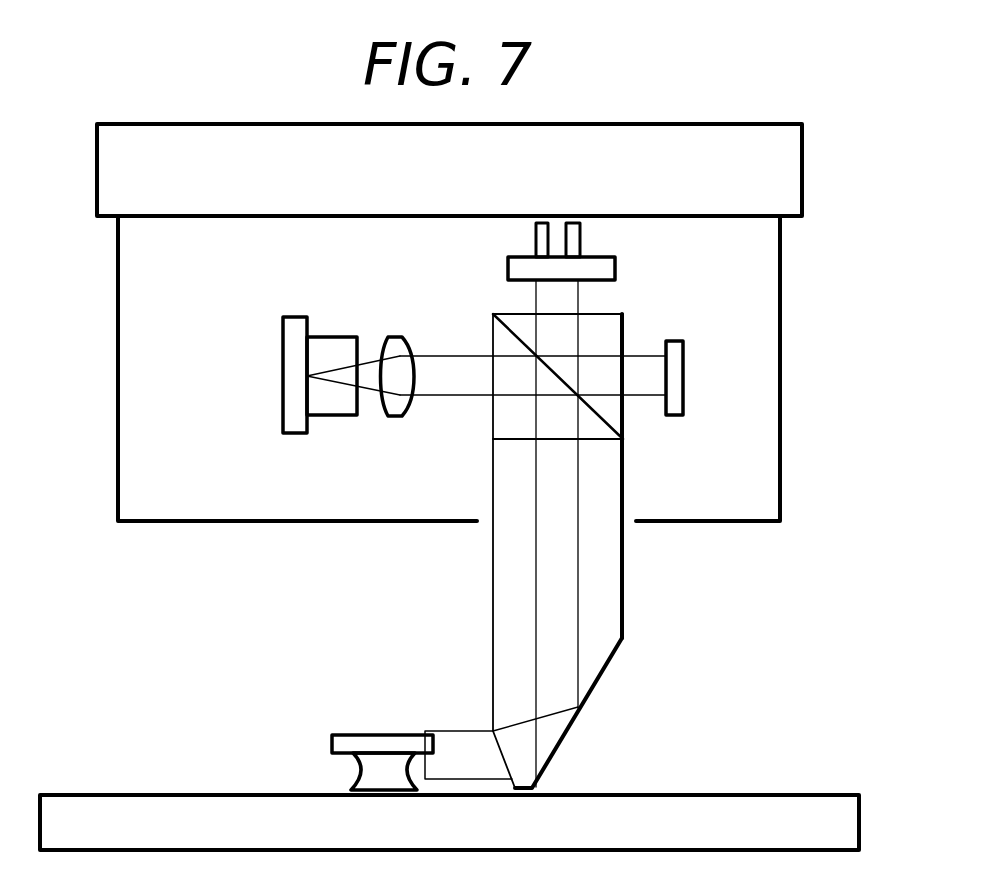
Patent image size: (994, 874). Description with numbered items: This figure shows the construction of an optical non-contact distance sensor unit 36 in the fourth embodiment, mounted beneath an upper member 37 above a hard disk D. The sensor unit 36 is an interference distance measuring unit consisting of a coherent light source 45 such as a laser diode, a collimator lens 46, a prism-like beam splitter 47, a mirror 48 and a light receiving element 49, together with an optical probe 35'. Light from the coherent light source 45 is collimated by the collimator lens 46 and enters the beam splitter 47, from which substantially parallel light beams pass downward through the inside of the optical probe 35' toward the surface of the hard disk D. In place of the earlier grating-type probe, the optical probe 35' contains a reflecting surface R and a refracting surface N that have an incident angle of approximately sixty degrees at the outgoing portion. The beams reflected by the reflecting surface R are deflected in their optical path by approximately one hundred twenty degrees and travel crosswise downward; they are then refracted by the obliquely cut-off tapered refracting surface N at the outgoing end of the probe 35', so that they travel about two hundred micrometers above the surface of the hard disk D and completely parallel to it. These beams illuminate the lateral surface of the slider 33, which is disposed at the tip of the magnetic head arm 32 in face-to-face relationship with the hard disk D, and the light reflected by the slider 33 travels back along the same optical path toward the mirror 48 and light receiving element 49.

The upper frame member 37 is at (802, 145).
The optical non-contact distance sensor unit 36 is at (780, 273).
The coherent light source 45 is at (295, 317).
The collimator lens 46 is at (398, 336).
The prism-like beam splitter 47 is at (612, 427).
The mirror 48 is at (676, 341).
The light receiving element 49 is at (615, 266).
The optical probe 35' is at (598, 551).
The reflecting surface R is at (560, 740).
The refracting surface N is at (500, 750).
The magnetic head arm 32 is at (405, 735).
The slider 33 is at (357, 770).
The hard disk D is at (785, 798).